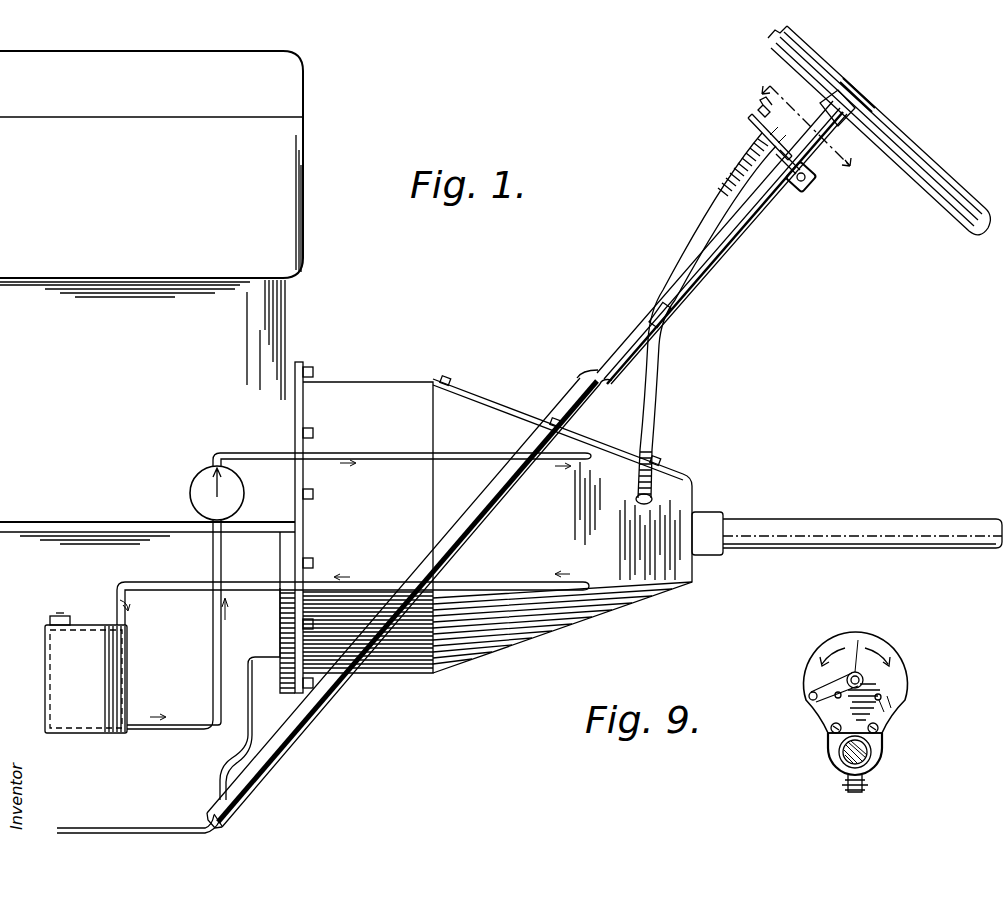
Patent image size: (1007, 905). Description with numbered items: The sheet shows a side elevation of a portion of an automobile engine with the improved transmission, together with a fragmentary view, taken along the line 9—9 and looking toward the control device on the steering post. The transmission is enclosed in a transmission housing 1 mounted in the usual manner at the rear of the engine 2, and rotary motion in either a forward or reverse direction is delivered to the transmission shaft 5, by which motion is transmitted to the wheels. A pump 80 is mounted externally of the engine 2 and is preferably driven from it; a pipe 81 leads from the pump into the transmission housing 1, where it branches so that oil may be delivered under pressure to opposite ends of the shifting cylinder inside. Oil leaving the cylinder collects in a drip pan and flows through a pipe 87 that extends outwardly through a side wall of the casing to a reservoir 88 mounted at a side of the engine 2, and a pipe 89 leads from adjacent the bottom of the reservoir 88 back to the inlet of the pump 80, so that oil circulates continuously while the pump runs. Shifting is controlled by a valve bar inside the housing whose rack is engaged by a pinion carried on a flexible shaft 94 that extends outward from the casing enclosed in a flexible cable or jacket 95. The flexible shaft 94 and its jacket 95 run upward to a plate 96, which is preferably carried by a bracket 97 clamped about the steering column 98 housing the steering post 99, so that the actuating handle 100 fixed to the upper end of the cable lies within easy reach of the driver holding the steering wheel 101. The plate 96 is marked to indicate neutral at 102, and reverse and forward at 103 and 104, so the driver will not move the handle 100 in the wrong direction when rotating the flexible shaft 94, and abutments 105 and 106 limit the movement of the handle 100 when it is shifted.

In FIG. 1, the transmission housing 1 is at (386, 388).
In FIG. 1, the engine 2 is at (262, 341).
In FIG. 1, the transmission shaft 5 is at (810, 526).
In FIG. 1, the section line 9— 9 is at (775, 82).
In FIG. 1, the pump 80 is at (198, 485).
In FIG. 1, the pipe 81 is at (381, 453).
In FIG. 1, the pipe 87 is at (522, 586).
In FIG. 1, the reservoir 88 is at (105, 660).
In FIG. 1, the pipe 89 is at (165, 716).
In FIG. 9, the flexible shaft 94 is at (850, 672).
In FIG. 1, the flexible cable or jacket 95 is at (700, 222).
In FIG. 1, the plate 96 is at (752, 126).
In FIG. 9, the plate 96 is at (893, 650).
In FIG. 1, the bracket 97 is at (795, 186).
In FIG. 9, the bracket 97 is at (830, 750).
In FIG. 1, the steering column 98 is at (744, 238).
In FIG. 9, the steering column 98 is at (878, 755).
In FIG. 9, the steering post 99 is at (878, 768).
In FIG. 1, the actuating handle 100 is at (760, 112).
In FIG. 9, the actuating handle 100 is at (810, 685).
In FIG. 1, the steering wheel 101 is at (952, 204).
In FIG. 9, the neutral marking 102 is at (864, 630).
In FIG. 9, the reverse marking 103 is at (835, 700).
In FIG. 9, the forward marking 104 is at (892, 707).
In FIG. 9, the abutment 105 is at (840, 706).
In FIG. 9, the abutment 106 is at (884, 696).